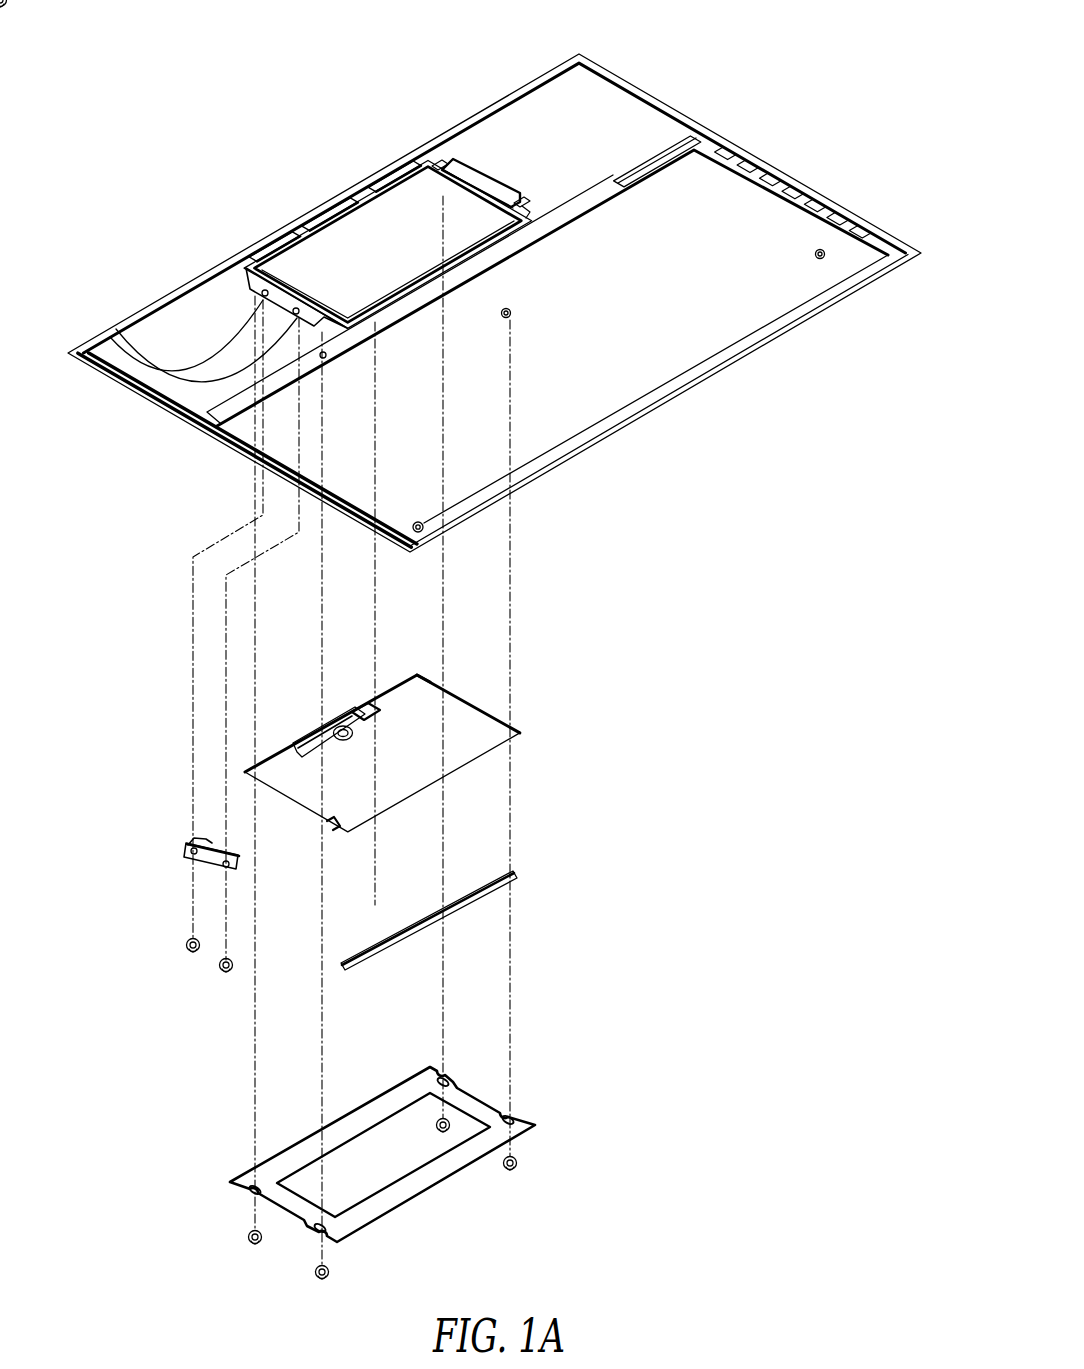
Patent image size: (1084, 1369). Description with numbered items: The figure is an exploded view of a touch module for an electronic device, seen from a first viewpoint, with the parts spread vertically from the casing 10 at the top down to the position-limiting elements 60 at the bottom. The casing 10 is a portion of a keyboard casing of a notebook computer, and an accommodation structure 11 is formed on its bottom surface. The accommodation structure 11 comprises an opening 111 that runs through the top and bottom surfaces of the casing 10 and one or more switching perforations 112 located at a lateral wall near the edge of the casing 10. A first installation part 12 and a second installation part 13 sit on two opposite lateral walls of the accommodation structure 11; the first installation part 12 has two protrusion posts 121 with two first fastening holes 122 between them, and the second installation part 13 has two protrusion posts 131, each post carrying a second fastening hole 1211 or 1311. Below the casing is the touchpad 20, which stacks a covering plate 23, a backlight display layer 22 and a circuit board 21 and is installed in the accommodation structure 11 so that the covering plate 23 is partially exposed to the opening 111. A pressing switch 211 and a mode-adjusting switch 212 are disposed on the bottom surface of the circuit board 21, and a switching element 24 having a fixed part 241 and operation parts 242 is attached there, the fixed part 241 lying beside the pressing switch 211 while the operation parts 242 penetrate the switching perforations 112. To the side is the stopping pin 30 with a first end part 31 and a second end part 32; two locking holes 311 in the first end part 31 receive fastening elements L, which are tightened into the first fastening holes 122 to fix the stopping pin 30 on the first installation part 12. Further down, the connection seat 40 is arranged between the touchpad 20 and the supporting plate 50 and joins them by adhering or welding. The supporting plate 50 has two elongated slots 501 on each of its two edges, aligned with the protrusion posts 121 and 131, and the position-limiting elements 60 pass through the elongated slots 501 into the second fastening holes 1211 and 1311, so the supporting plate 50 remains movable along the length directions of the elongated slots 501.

The casing 10 is at (700, 104).
The accommodation structure 11 is at (370, 192).
The opening 111 is at (378, 228).
The switching perforations 112 is at (296, 232).
The first installation part 12 is at (210, 290).
The protrusion posts 121 is at (258, 272).
The second fastening hole 1211 is at (262, 293).
The first fastening holes 122 is at (110, 337).
The second installation part 13 is at (470, 178).
The protrusion posts 131 is at (438, 164).
The second fastening hole 1311 is at (530, 212).
The touchpad 20 is at (428, 747).
The circuit board 21 is at (470, 746).
The pressing switch 211 is at (350, 740).
The mode-adjusting switch 212 is at (333, 832).
The backlight display layer 22 is at (466, 696).
The covering plate 23 is at (417, 675).
The switching element 24 is at (300, 744).
The fixed part 241 is at (318, 760).
The operation parts 242 is at (360, 706).
The stopping pin 30 is at (168, 850).
The first end part 31 is at (212, 868).
The locking holes 311 is at (192, 855).
The second end part 32 is at (196, 842).
The fastening elements L is at (186, 950).
The connection seat 40 is at (366, 971).
The supporting plate 50 is at (430, 1158).
The elongated slots 501 is at (512, 1116).
The position-limiting elements 60 is at (312, 1277).